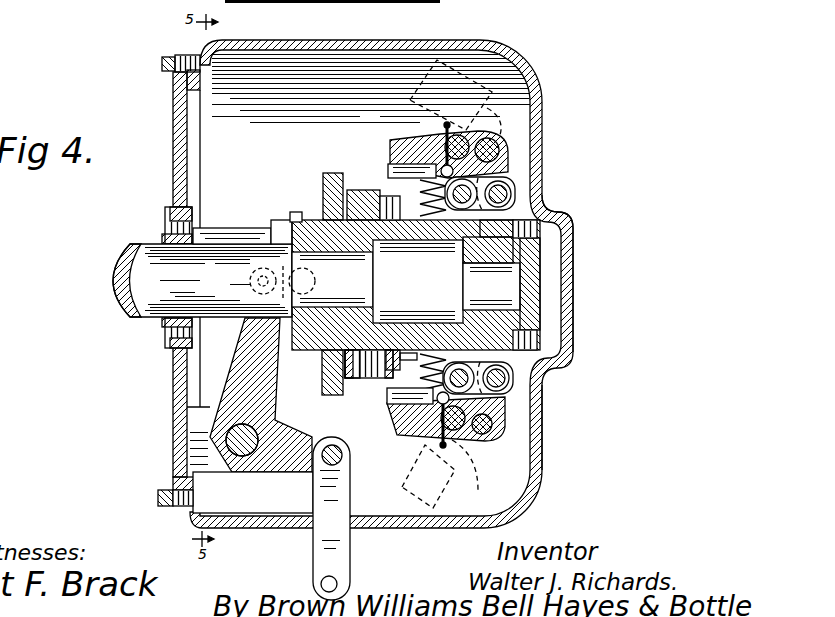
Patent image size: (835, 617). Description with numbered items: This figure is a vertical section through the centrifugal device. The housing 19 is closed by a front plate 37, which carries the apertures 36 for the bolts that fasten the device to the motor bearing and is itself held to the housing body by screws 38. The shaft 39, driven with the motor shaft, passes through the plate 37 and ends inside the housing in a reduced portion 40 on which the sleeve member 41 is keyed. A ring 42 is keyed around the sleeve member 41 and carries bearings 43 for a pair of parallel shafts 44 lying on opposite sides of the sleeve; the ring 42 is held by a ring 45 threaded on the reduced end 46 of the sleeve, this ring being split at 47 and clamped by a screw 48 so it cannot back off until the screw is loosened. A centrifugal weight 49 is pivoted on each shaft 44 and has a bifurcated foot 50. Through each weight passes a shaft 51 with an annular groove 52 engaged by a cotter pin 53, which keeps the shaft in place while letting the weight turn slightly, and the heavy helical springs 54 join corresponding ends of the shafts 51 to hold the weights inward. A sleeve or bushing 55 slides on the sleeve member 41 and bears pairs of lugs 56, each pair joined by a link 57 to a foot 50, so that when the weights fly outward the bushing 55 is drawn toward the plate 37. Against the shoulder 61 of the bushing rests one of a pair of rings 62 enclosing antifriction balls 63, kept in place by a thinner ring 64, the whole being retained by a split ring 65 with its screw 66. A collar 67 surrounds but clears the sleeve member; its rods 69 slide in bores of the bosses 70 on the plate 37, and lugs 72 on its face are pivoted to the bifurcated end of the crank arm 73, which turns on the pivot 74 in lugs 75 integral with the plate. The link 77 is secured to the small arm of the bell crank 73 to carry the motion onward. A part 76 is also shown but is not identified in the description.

The housing 19 is at (354, 44).
The apertures 36 is at (170, 232).
The front plate 37 is at (178, 192).
The screws 38 is at (168, 71).
The shaft 39 is at (202, 280).
The reduced portion 40 is at (418, 281).
The sleeve member 41 is at (294, 224).
The ring 42 is at (552, 210).
The bearings 43 is at (492, 134).
The shafts 44 is at (505, 178).
The ring 45 is at (538, 340).
The reduced end 46 is at (535, 262).
The split ring 47 is at (497, 231).
The screw 48 is at (538, 229).
The centrifugal weight 49 is at (406, 142).
The bifurcated feet 50 is at (510, 190).
The shaft 51 is at (480, 120).
The annular groove 52 is at (463, 133).
The cotter pins 53 is at (449, 124).
The helical springs 54 is at (396, 210).
The sleeve or bushing 55 is at (456, 346).
The pairs of lugs 56 is at (385, 165).
The link 57 is at (472, 244).
The shoulder 61 is at (401, 363).
The rings 62 is at (369, 377).
The antifriction balls 63 is at (384, 186).
The ring 64 is at (386, 386).
The split ring 65 is at (344, 178).
The screw 66 is at (346, 380).
The collar 67 is at (326, 386).
The rods 69 is at (278, 224).
The bosses 70 is at (212, 230).
The lugs 72 is at (331, 279).
The crank arm 73 is at (247, 351).
The pivot 74 is at (243, 460).
The lugs 75 is at (211, 472).
The lug 76 is at (298, 214).
The link 77 is at (347, 553).